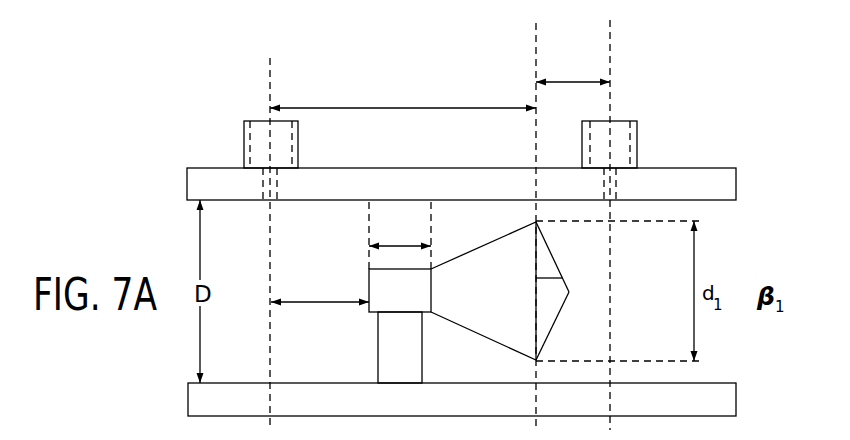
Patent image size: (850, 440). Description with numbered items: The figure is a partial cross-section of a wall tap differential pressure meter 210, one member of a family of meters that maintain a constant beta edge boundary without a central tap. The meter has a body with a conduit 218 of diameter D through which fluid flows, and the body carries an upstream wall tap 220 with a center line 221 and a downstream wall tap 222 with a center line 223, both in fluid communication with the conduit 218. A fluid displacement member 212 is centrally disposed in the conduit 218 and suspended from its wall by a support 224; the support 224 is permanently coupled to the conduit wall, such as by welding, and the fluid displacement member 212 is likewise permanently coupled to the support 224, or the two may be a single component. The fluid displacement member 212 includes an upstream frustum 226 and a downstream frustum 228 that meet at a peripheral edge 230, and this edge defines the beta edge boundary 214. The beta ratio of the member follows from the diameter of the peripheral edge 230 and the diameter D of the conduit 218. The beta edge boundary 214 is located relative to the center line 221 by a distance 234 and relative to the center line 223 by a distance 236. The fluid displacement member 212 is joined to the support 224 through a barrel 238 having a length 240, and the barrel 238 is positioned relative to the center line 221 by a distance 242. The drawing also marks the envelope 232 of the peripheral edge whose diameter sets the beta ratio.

The wall tap differential pressure meter 210 is at (748, 98).
The fluid displacement member 212 is at (553, 255).
The beta edge boundary 214 is at (536, 53).
The conduit 218 is at (228, 338).
The upstream wall tap 220 is at (244, 143).
The center line 221 is at (272, 72).
The downstream wall tap 222 is at (637, 143).
The center line 223 is at (610, 52).
The support 224 is at (422, 347).
The upstream frustum 226 is at (482, 245).
The downstream frustum 228 is at (553, 328).
The peripheral edge 230 is at (563, 278).
The tip diameter envelope 232 is at (695, 252).
The distance 234 is at (403, 108).
The distance 236 is at (572, 80).
The barrel 238 is at (369, 277).
The length 240 is at (398, 242).
The distance 242 is at (322, 303).